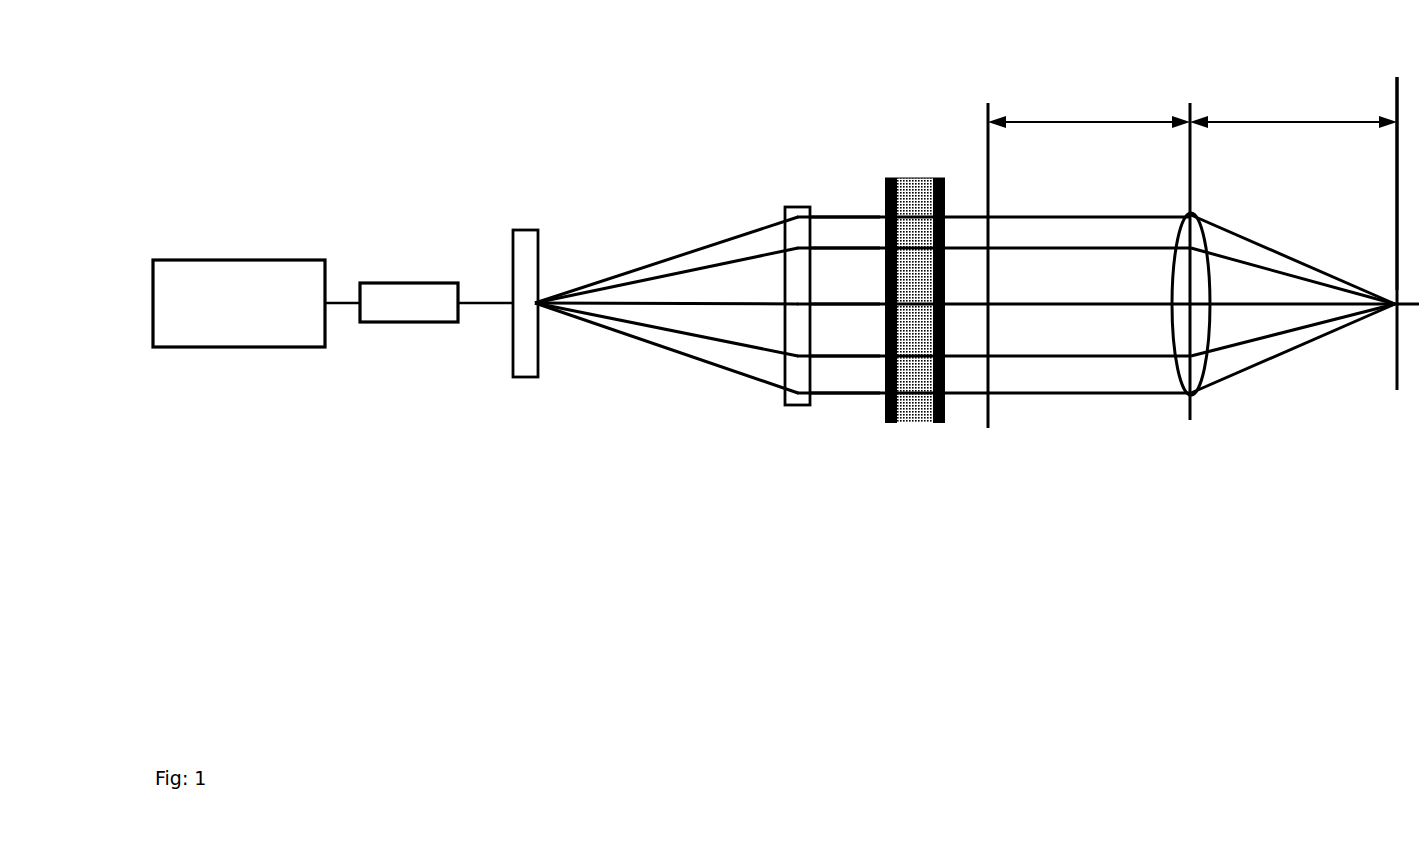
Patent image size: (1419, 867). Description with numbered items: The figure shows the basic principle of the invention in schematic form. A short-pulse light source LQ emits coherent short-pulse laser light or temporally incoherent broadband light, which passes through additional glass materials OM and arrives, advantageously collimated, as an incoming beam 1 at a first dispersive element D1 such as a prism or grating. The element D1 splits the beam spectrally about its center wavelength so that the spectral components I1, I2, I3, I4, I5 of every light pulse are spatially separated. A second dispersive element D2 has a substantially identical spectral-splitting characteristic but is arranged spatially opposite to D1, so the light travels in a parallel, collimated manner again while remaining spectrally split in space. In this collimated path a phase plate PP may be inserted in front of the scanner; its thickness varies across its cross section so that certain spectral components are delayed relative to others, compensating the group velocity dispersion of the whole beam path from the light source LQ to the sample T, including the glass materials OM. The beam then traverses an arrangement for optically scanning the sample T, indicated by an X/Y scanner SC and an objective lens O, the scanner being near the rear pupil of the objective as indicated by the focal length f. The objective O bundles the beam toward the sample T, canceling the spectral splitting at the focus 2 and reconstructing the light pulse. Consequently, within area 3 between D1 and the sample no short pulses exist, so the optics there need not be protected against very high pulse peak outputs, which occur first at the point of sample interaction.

The incoming light pulse 1 is at (343, 200).
The focus on the sample 2 is at (1391, 288).
The area of spectrally split optics 3 is at (1407, 587).
The short-pulse light source LQ is at (239, 334).
The additional glass materials OM is at (409, 282).
The first dispersive element D1 is at (532, 328).
The second dispersive element D2 is at (788, 276).
The spectral component I1 is at (845, 408).
The spectral component I2 is at (845, 342).
The spectral component I3 is at (845, 289).
The spectral component I4 is at (845, 237).
The spectral component I5 is at (845, 202).
The phase plate PP is at (915, 329).
The coating / surfaces of phase plate K is at (934, 150).
The X/Y scanner SC is at (979, 293).
The objective lens O is at (1191, 296).
The sample T is at (1394, 283).
The focal length of the objective f is at (1192, 107).